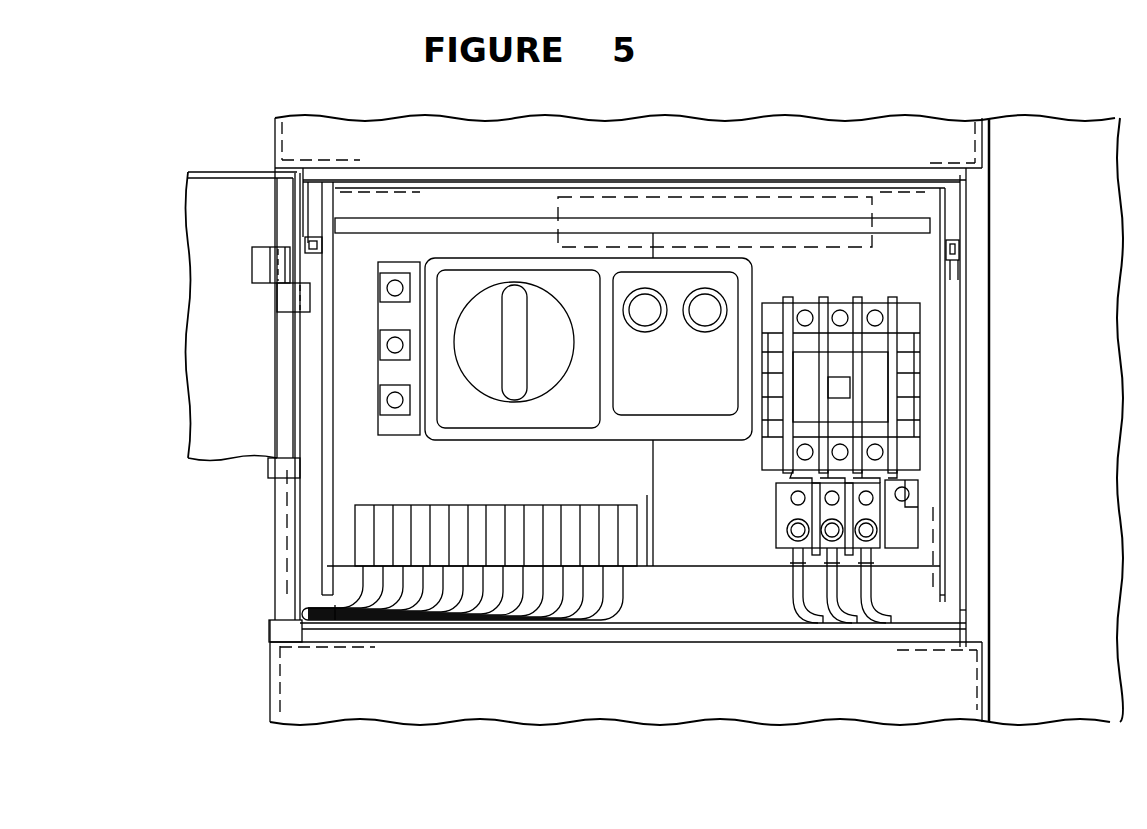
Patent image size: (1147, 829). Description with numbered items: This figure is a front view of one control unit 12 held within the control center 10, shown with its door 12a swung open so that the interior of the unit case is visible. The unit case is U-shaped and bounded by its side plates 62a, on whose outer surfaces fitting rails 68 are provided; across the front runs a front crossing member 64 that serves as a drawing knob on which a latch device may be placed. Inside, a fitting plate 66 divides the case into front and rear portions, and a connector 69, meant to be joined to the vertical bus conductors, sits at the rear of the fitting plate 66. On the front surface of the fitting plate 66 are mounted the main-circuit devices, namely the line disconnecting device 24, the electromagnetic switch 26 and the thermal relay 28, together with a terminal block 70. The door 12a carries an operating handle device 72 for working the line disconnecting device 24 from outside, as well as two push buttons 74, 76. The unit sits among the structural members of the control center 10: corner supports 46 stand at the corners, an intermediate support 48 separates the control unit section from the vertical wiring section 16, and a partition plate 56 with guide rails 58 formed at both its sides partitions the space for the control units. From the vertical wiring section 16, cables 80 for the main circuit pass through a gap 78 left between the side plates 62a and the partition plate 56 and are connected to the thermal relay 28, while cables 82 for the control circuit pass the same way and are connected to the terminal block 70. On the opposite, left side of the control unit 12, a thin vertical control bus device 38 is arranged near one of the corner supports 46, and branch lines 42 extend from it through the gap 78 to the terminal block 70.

The control center 10 is at (272, 571).
The control unit 12 is at (702, 506).
The door 12a is at (222, 172).
The vertical wiring section 16 is at (1080, 375).
The line disconnecting device 24 is at (380, 416).
The electromagnetic switch 26 is at (828, 303).
The thermal relay 28 is at (776, 516).
The vertical control bus device 38 is at (287, 542).
The branch lines 42 is at (335, 612).
The corner supports 46 is at (268, 646).
The intermediate support 48 is at (976, 496).
The partition plate 56 is at (650, 178).
The guide rails 58 is at (955, 262).
The side plates 62a is at (322, 372).
The front crossing member 64 is at (752, 180).
The fitting plate 66 is at (944, 590).
The fitting rails 68 is at (950, 240).
The connector 69 is at (556, 222).
The terminal block 70 is at (425, 507).
The operating handle device 72 is at (530, 420).
The push button 74 is at (645, 328).
The push button 76 is at (705, 328).
The gap 78 is at (328, 604).
The cables for the main circuit 80 is at (880, 618).
The cables for the control circuit 82 is at (543, 598).